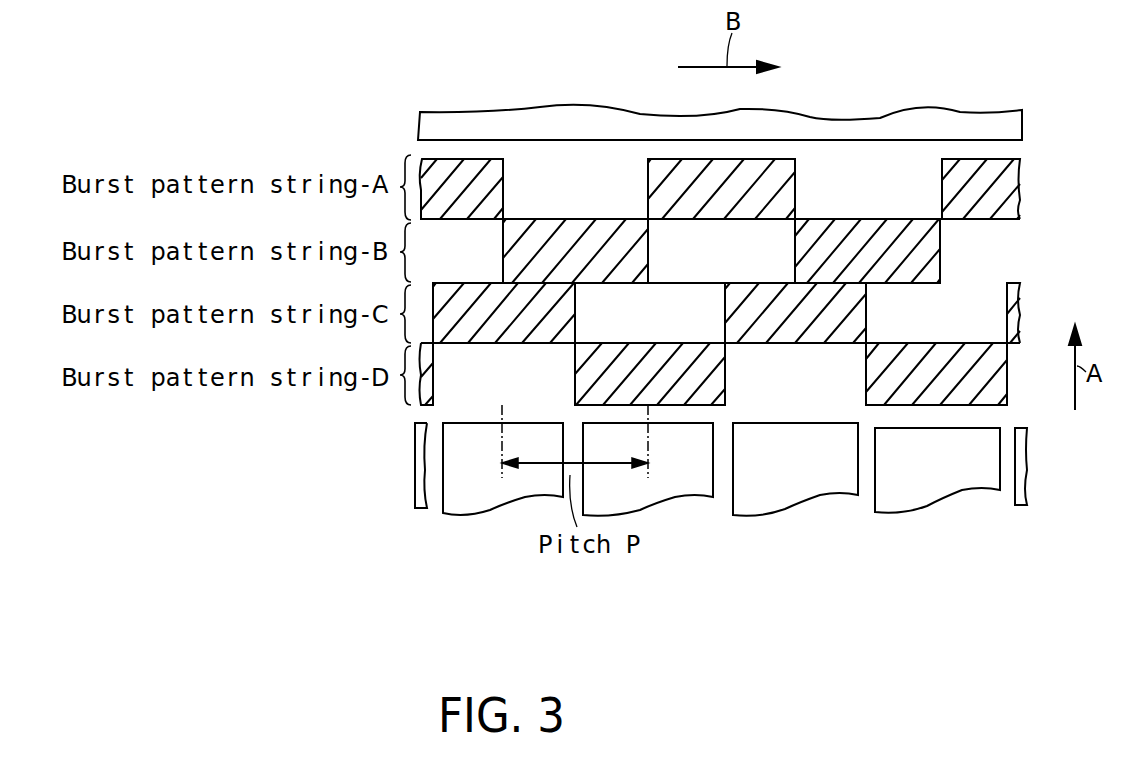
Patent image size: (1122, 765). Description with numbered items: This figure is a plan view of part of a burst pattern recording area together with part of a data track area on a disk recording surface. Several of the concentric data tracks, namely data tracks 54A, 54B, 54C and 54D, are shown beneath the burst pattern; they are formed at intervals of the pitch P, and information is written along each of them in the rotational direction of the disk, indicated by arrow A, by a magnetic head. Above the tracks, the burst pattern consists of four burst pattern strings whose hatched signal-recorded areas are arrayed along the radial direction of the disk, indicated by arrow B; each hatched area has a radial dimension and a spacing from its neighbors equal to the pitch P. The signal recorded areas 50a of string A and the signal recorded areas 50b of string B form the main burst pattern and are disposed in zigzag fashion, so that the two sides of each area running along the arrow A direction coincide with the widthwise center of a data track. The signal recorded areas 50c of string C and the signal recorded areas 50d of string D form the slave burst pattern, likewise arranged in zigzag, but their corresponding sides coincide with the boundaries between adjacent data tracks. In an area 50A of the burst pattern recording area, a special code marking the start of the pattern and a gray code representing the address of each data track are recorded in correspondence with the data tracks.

The area included in the burst pattern recording area 50A is at (865, 118).
The signal recorded areas of burst pattern string A 50a is at (648, 192).
The signal recorded areas of burst pattern string B 50b is at (795, 262).
The signal recorded areas of burst pattern string C 50c is at (723, 325).
The signal recorded areas of burst pattern string D 50d is at (575, 388).
The data track 54A is at (493, 490).
The data track 54B is at (655, 487).
The data track 54C is at (802, 480).
The data track 54D is at (945, 485).